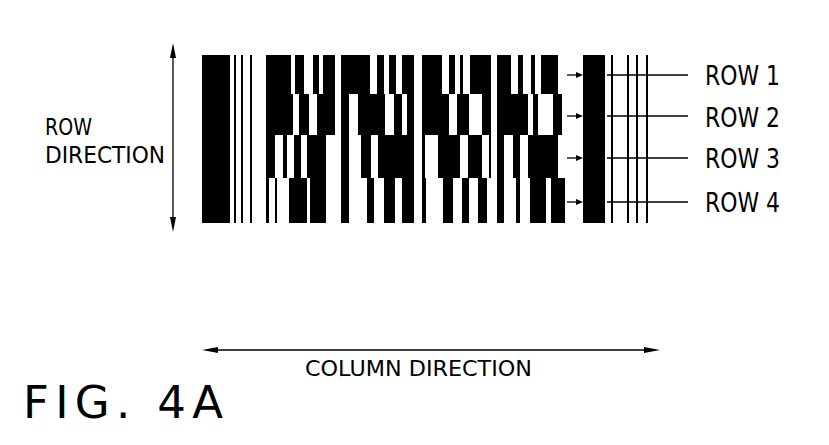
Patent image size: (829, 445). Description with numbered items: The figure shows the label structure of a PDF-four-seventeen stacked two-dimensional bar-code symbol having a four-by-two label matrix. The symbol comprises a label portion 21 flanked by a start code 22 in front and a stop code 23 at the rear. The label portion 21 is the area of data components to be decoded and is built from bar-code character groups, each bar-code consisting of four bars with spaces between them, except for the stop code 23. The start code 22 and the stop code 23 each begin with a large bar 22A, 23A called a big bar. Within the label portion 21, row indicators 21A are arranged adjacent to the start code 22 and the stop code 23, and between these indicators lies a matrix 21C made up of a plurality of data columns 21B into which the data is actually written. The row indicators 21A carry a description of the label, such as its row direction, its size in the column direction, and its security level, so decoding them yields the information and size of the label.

The label portion 21 is at (420, 170).
The row indicators 21A is at (337, 52).
The data columns 21B is at (415, 52).
The matrix 21C is at (422, 142).
The start code 22 is at (222, 143).
The large bar of start code 22A is at (212, 223).
The stop code 23 is at (625, 142).
The large bar of stop code 23A is at (597, 223).